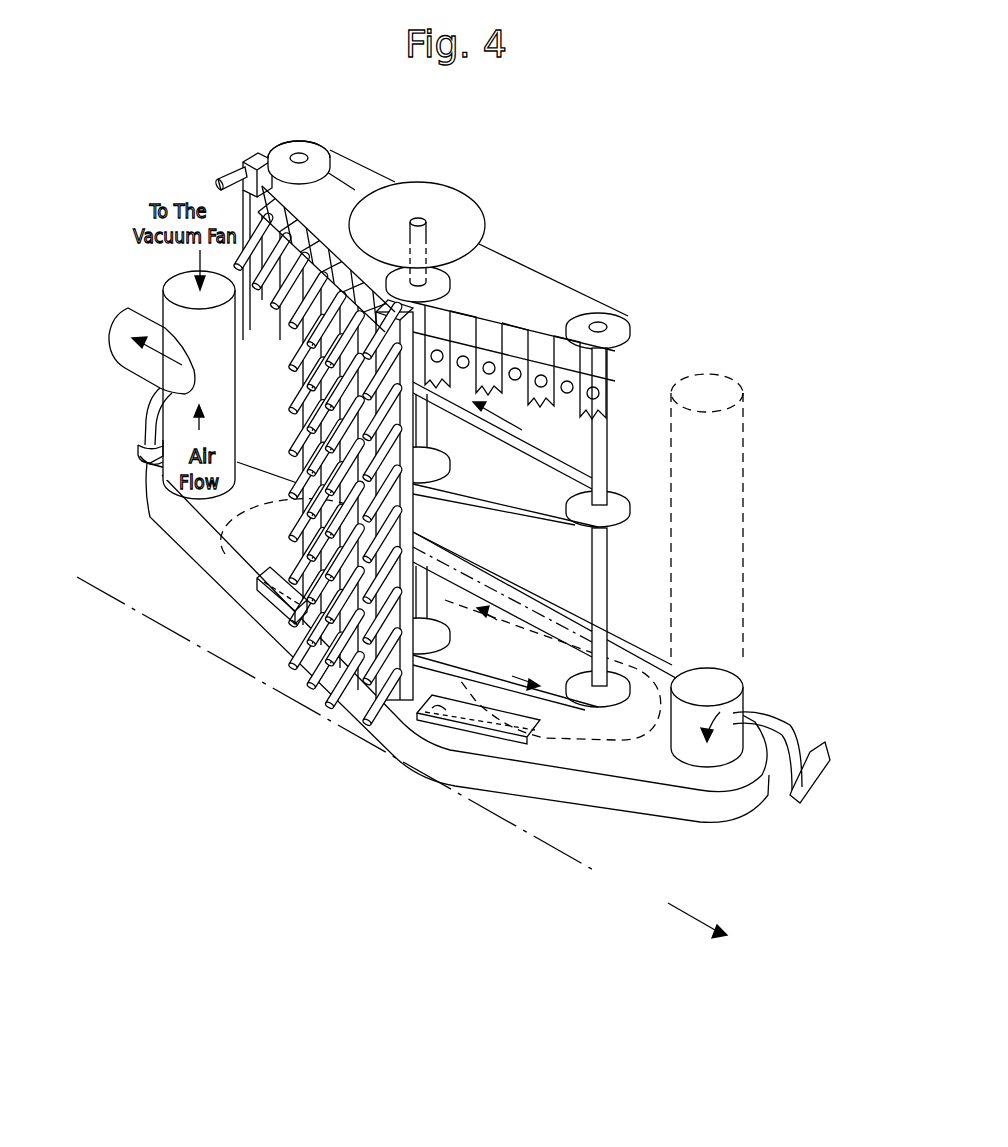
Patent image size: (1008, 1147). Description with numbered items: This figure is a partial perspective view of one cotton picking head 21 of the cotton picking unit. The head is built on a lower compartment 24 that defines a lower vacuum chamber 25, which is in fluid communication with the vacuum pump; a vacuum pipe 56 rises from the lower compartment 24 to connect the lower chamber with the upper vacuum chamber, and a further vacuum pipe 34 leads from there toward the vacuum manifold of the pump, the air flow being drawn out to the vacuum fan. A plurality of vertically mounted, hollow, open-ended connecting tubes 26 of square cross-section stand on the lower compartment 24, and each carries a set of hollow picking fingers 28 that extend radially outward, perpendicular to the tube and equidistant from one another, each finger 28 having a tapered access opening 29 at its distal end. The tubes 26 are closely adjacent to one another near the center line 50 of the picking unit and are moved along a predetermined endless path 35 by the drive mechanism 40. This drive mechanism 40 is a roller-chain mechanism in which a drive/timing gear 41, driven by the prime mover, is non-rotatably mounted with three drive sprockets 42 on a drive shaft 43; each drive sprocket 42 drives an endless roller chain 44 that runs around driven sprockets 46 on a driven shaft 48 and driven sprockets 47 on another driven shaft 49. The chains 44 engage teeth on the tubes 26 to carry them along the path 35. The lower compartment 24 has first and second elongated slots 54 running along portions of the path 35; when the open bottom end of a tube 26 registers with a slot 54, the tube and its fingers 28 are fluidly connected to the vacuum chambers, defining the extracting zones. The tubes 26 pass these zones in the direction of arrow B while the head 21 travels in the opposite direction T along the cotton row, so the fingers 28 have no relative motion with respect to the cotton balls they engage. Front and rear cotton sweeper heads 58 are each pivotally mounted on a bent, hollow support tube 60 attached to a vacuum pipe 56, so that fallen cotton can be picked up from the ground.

The cotton picking head 21 is at (778, 442).
The lower compartment 24 is at (662, 800).
The lower vacuum chamber 25 is at (490, 745).
The connecting tube 26 is at (258, 165).
The picking finger 28 is at (243, 165).
The access opening 29 is at (218, 183).
The vacuum pipe 34 is at (158, 318).
The predetermined endless path 35 is at (505, 580).
The drive mechanism 40 is at (482, 200).
The drive/timing gear 41 is at (470, 223).
The drive sprocket 42 is at (445, 285).
The drive shaft 43 is at (425, 435).
The endless roller chain 44 is at (525, 270).
The driven sprocket 46 is at (628, 324).
The driven sprocket 47 is at (305, 147).
The driven shaft 48 is at (608, 568).
The driven shaft 49 is at (290, 143).
The center line 50 is at (168, 636).
The elongated slot 54 is at (405, 788).
The vacuum pipe 56 is at (240, 398).
The cotton sweeper head 58 is at (138, 450).
The support tube 60 is at (145, 408).
The direction of connecting tube movement B is at (515, 630).
The travel direction T is at (692, 910).